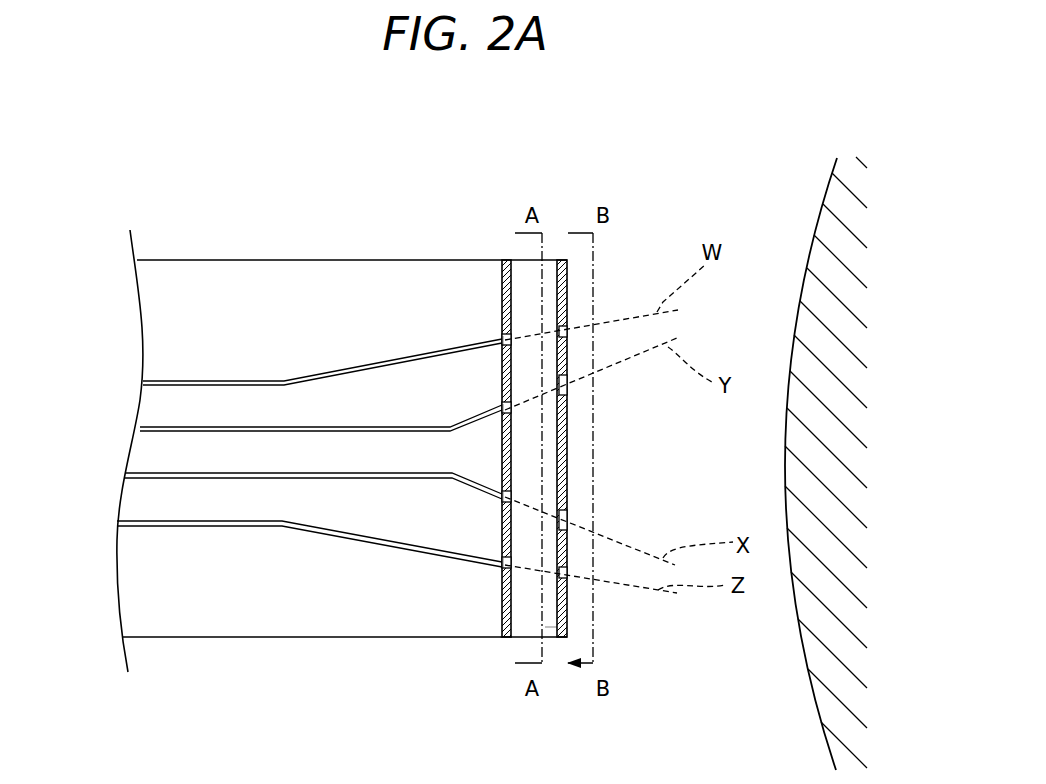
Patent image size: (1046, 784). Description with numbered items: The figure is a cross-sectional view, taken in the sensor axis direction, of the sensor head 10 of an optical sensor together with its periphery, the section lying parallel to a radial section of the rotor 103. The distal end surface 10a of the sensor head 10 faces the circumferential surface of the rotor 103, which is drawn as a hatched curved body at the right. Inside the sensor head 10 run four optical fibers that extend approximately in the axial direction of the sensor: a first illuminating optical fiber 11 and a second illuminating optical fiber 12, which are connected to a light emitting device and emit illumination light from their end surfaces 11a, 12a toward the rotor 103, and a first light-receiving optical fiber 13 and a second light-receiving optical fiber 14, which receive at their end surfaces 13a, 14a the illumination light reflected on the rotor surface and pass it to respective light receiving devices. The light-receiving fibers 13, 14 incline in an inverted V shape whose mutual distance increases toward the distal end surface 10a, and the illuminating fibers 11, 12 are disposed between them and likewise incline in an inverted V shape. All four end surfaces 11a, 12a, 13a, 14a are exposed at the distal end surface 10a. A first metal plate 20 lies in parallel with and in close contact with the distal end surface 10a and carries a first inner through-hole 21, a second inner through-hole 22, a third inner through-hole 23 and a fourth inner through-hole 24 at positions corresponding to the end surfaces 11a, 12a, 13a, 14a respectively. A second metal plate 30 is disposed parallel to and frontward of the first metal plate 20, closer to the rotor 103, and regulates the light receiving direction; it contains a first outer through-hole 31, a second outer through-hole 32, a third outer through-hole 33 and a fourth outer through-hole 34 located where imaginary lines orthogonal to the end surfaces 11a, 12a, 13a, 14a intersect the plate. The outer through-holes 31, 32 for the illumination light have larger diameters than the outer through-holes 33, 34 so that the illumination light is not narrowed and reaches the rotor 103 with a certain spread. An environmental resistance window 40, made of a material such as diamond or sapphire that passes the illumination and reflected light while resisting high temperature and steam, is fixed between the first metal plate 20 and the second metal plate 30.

The sensor head 10 is at (306, 236).
The distal end surface 10a is at (506, 637).
The first illuminating optical fiber 11 is at (175, 426).
The second illuminating optical fiber 12 is at (173, 478).
The first light-receiving optical fiber 13 is at (178, 380).
The second light-receiving optical fiber 14 is at (173, 527).
The end surface 11a is at (507, 410).
The end surface 12a is at (507, 497).
The end surface 13a is at (507, 340).
The end surface 14a is at (507, 565).
The first metal plate 20 is at (508, 260).
The first inner through-hole 21 is at (500, 401).
The second inner through-hole 22 is at (500, 500).
The third inner through-hole 23 is at (502, 336).
The fourth inner through-hole 24 is at (501, 567).
The second metal plate 30 is at (563, 260).
The first outer through-hole 31 is at (570, 387).
The second outer through-hole 32 is at (570, 515).
The third outer through-hole 33 is at (570, 327).
The fourth outer through-hole 34 is at (570, 577).
The environmental resistance window 40 is at (551, 627).
The rotor 103 is at (832, 228).